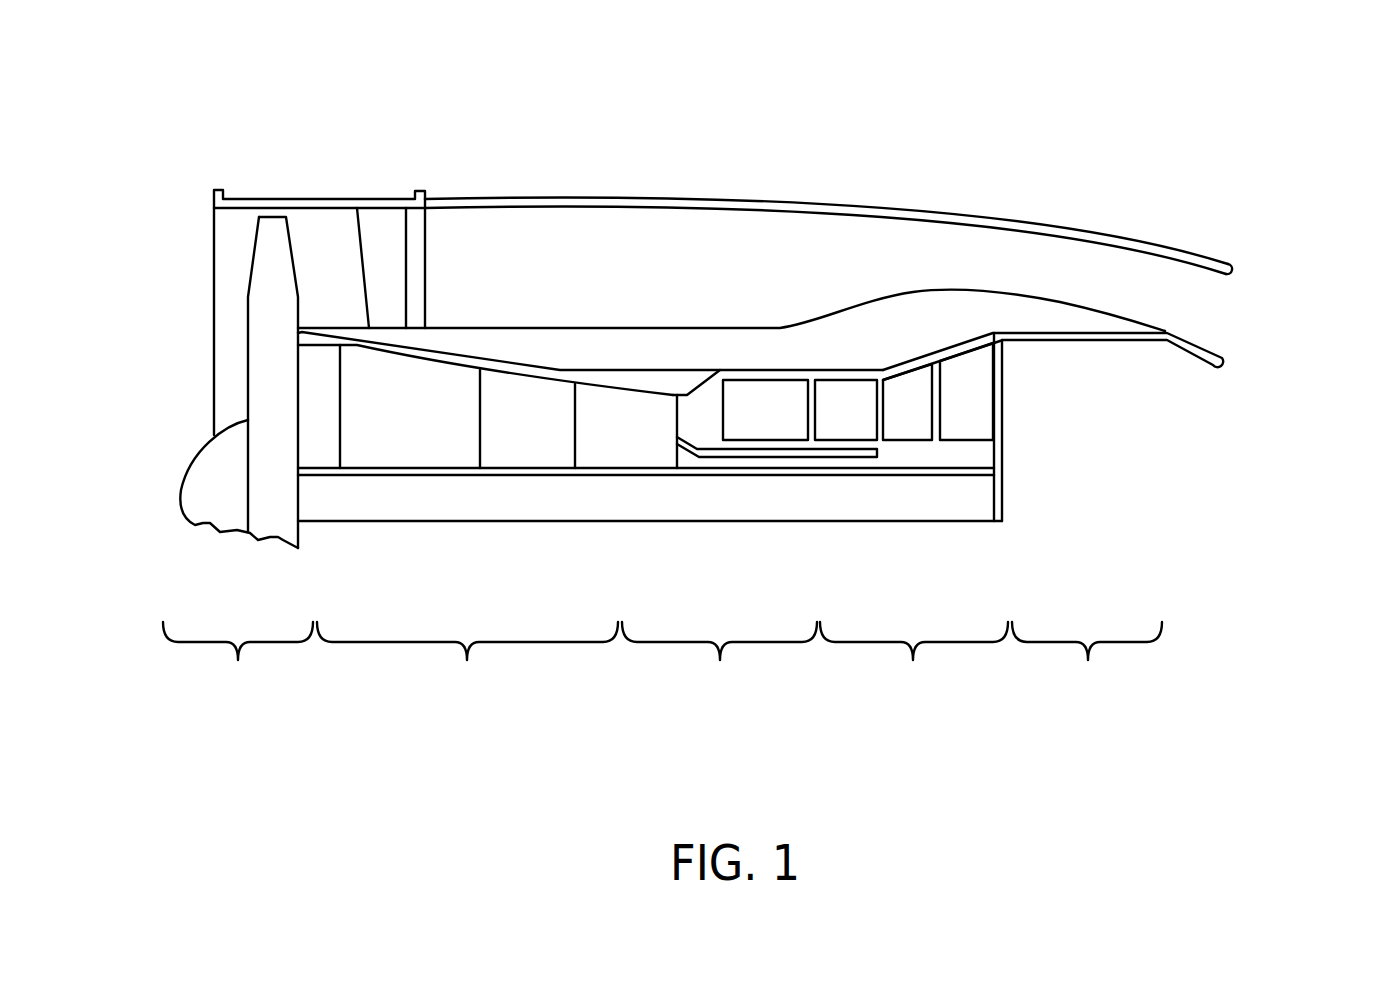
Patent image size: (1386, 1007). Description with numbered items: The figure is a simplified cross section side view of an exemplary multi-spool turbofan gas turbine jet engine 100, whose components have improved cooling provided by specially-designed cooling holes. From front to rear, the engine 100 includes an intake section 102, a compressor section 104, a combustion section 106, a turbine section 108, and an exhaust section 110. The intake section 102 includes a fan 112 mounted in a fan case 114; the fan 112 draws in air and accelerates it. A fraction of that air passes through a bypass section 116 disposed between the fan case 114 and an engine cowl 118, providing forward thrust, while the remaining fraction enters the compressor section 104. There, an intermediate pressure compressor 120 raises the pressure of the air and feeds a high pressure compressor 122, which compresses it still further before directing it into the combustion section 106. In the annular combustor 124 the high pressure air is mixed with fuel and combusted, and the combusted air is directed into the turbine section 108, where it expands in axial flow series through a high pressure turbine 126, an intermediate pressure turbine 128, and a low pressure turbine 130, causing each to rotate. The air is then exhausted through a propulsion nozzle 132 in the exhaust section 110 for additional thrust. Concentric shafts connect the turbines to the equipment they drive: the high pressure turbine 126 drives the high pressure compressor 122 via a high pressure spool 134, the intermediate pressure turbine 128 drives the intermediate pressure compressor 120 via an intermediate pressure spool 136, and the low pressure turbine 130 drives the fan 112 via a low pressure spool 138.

The multi-spool turbofan gas turbine jet engine 100 is at (466, 152).
The intake section 102 is at (238, 663).
The compressor section 104 is at (467, 663).
The combustion section 106 is at (719, 662).
The turbine section 108 is at (914, 662).
The exhaust section 110 is at (1087, 662).
The fan 112 is at (262, 329).
The fan case 114 is at (328, 200).
The bypass section 116 is at (630, 223).
The engine cowl 118 is at (706, 329).
The intermediate pressure compressor 120 is at (418, 455).
The high pressure compressor 122 is at (623, 457).
The annular combustor 124 is at (778, 395).
The high pressure turbine 126 is at (850, 397).
The intermediate pressure turbine 128 is at (915, 382).
The low pressure turbine 130 is at (980, 372).
The propulsion nozzle 132 is at (1200, 418).
The high pressure spool 134 is at (723, 450).
The intermediate pressure spool 136 is at (823, 470).
The low pressure spool 138 is at (902, 508).